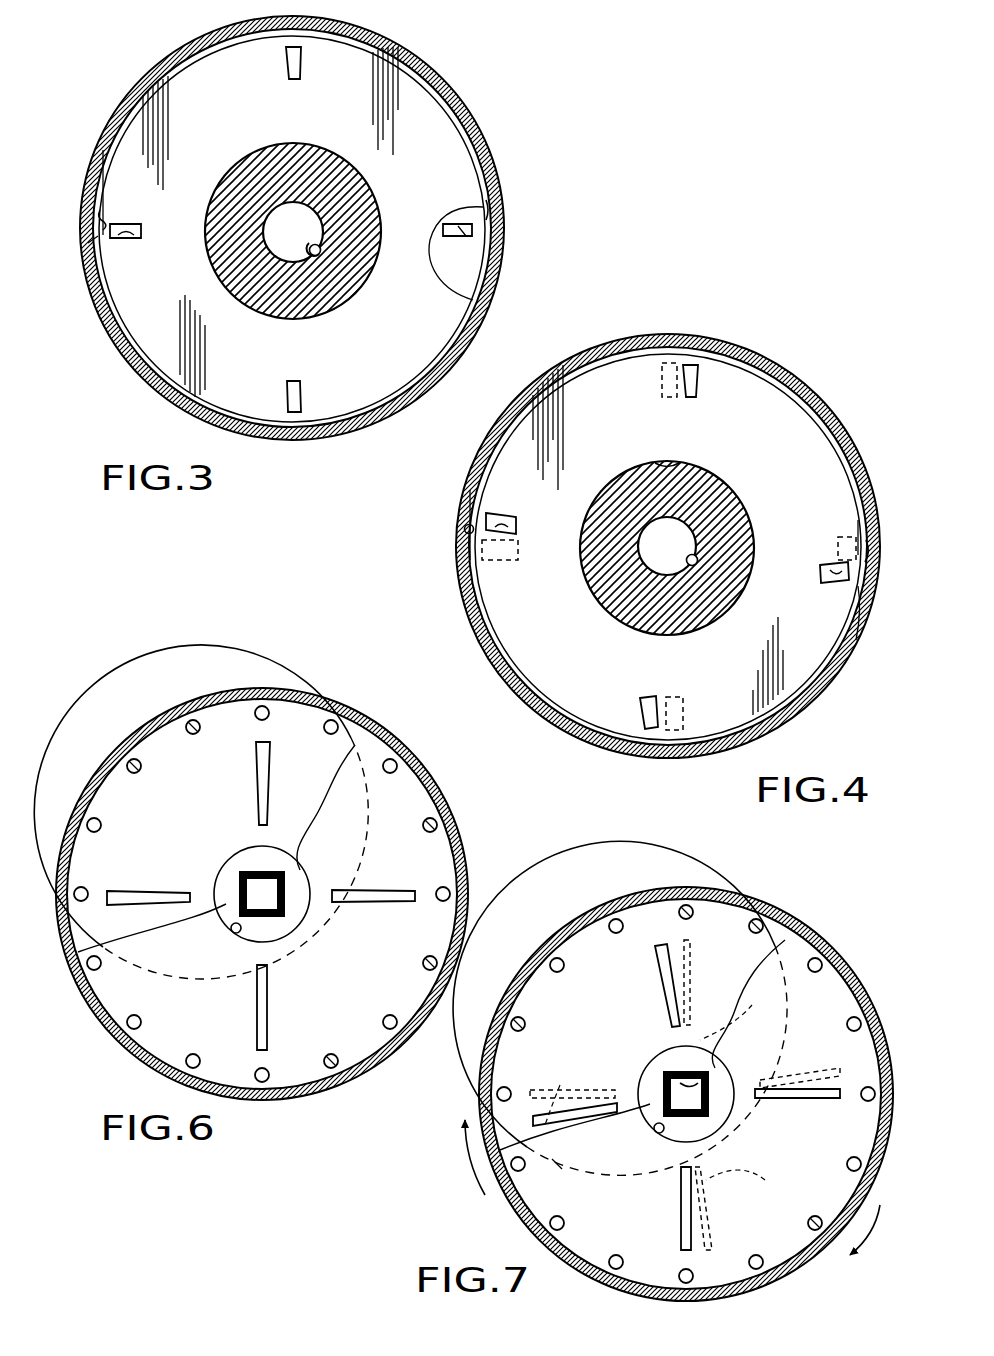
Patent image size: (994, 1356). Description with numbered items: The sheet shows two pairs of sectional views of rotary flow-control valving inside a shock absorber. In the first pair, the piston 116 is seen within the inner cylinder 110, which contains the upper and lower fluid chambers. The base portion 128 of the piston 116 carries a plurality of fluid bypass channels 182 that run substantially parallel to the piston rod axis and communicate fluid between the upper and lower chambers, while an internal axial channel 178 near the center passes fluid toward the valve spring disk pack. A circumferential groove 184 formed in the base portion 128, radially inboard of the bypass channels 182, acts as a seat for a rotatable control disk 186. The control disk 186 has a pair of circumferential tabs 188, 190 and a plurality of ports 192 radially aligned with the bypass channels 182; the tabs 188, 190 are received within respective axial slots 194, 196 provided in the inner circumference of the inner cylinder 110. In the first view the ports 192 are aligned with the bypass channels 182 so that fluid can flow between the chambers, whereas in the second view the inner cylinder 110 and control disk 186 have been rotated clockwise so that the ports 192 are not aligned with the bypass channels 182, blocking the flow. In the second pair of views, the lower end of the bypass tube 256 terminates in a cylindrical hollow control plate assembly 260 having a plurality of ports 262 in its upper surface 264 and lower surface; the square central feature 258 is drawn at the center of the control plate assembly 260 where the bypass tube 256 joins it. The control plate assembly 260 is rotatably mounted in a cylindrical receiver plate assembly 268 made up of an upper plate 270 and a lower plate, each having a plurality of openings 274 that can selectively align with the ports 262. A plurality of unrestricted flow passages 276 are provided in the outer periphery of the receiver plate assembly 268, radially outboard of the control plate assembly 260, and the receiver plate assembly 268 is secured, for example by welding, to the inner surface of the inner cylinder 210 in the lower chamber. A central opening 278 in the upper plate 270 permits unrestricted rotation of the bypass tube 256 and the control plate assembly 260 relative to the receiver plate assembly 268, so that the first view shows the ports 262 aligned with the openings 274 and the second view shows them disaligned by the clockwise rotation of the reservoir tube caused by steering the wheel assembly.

In FIG. 3, the inner cylinder 110 is at (478, 150).
In FIG. 4, the inner cylinder 110 is at (830, 415).
In FIG. 3, the piston 116 is at (364, 166).
In FIG. 4, the piston 116 is at (730, 472).
In FIG. 3, the base portion 128 is at (248, 277).
In FIG. 4, the base portion 128 is at (642, 620).
In FIG. 3, the internal axial channel 178 is at (325, 258).
In FIG. 4, the internal axial channel 178 is at (700, 562).
In FIG. 3, the fluid bypass channels 182 is at (288, 73).
In FIG. 4, the fluid bypass channels 182 is at (660, 382).
In FIG. 3, the circumferential groove 184 is at (366, 192).
In FIG. 4, the circumferential groove 184 is at (648, 463).
In FIG. 3, the control disk 186 is at (195, 82).
In FIG. 4, the control disk 186 is at (586, 392).
In FIG. 4, the circumferential tab 188 is at (872, 575).
In FIG. 3, the circumferential tab 190 is at (92, 243).
In FIG. 4, the circumferential tab 190 is at (464, 530).
In FIG. 3, the ports 192 is at (302, 62).
In FIG. 4, the ports 192 is at (700, 380).
In FIG. 3, the axial slot 194 is at (100, 215).
In FIG. 4, the axial slot 194 is at (468, 560).
In FIG. 3, the axial slot 196 is at (490, 208).
In FIG. 4, the axial slot 196 is at (866, 545).
In FIG. 6, the inner cylinder 210 is at (305, 700).
In FIG. 7, the inner cylinder 210 is at (742, 895).
In FIG. 6, the bypass tube 256 is at (302, 893).
In FIG. 7, the bypass tube 256 is at (730, 1092).
In FIG. 6, the square bore 258 is at (256, 921).
In FIG. 7, the square bore 258 is at (712, 1055).
In FIG. 6, the control plate assembly 260 is at (240, 745).
In FIG. 7, the control plate assembly 260 is at (605, 965).
In FIG. 6, the ports 262 is at (188, 890).
In FIG. 7, the ports 262 is at (822, 1060).
In FIG. 6, the upper surface 264 is at (131, 822).
In FIG. 7, the upper surface 264 is at (645, 960).
In FIG. 6, the receiver plate assembly 268 is at (422, 772).
In FIG. 7, the receiver plate assembly 268 is at (820, 950).
In FIG. 6, the upper plate 270 is at (282, 1072).
In FIG. 7, the upper plate 270 is at (548, 1205).
In FIG. 6, the openings 274 is at (330, 905).
In FIG. 7, the openings 274 is at (700, 1008).
In FIG. 6, the unrestricted flow passages 276 is at (140, 740).
In FIG. 7, the unrestricted flow passages 276 is at (722, 895).
In FIG. 6, the central opening 278 is at (236, 933).
In FIG. 7, the central opening 278 is at (658, 1134).